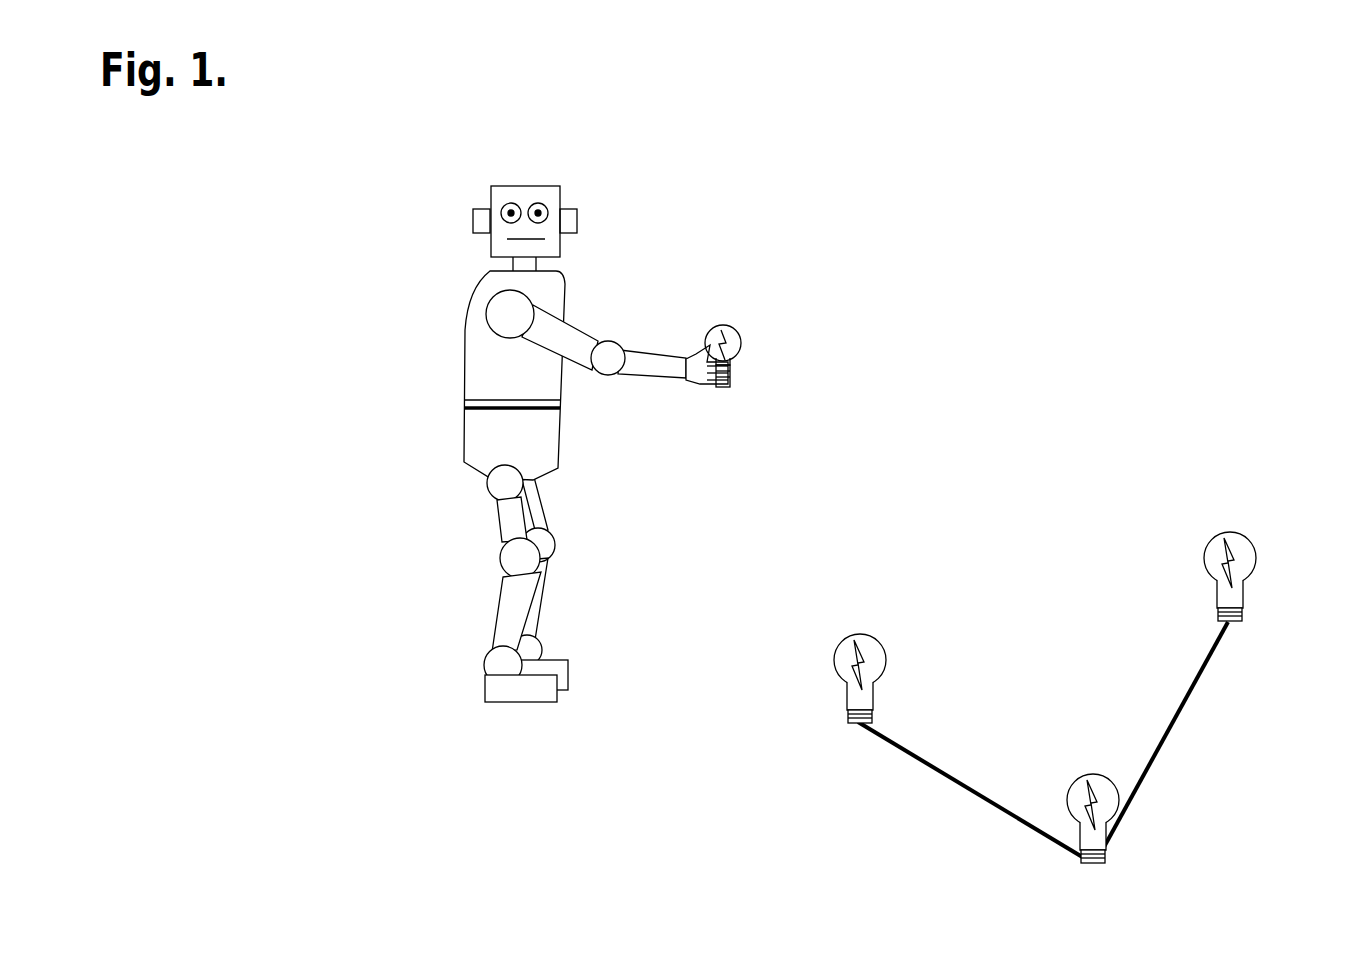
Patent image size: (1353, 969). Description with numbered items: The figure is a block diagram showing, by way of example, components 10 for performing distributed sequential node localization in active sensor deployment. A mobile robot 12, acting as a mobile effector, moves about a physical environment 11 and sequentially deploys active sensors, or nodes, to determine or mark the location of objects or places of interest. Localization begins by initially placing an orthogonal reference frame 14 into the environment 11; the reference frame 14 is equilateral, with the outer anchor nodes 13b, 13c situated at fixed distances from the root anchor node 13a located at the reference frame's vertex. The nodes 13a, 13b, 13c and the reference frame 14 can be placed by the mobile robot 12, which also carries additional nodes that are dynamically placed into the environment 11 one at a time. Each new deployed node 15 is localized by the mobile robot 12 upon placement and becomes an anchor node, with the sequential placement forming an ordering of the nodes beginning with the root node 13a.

The components 10 is at (205, 152).
The environment 11 is at (1080, 268).
The mobile robot 12 is at (462, 332).
The root anchor node 13a is at (1084, 772).
The outer anchor node 13b is at (1257, 550).
The outer anchor node 13c is at (836, 652).
The orthogonal reference frame 14 is at (994, 804).
The deployed node 15 is at (745, 352).